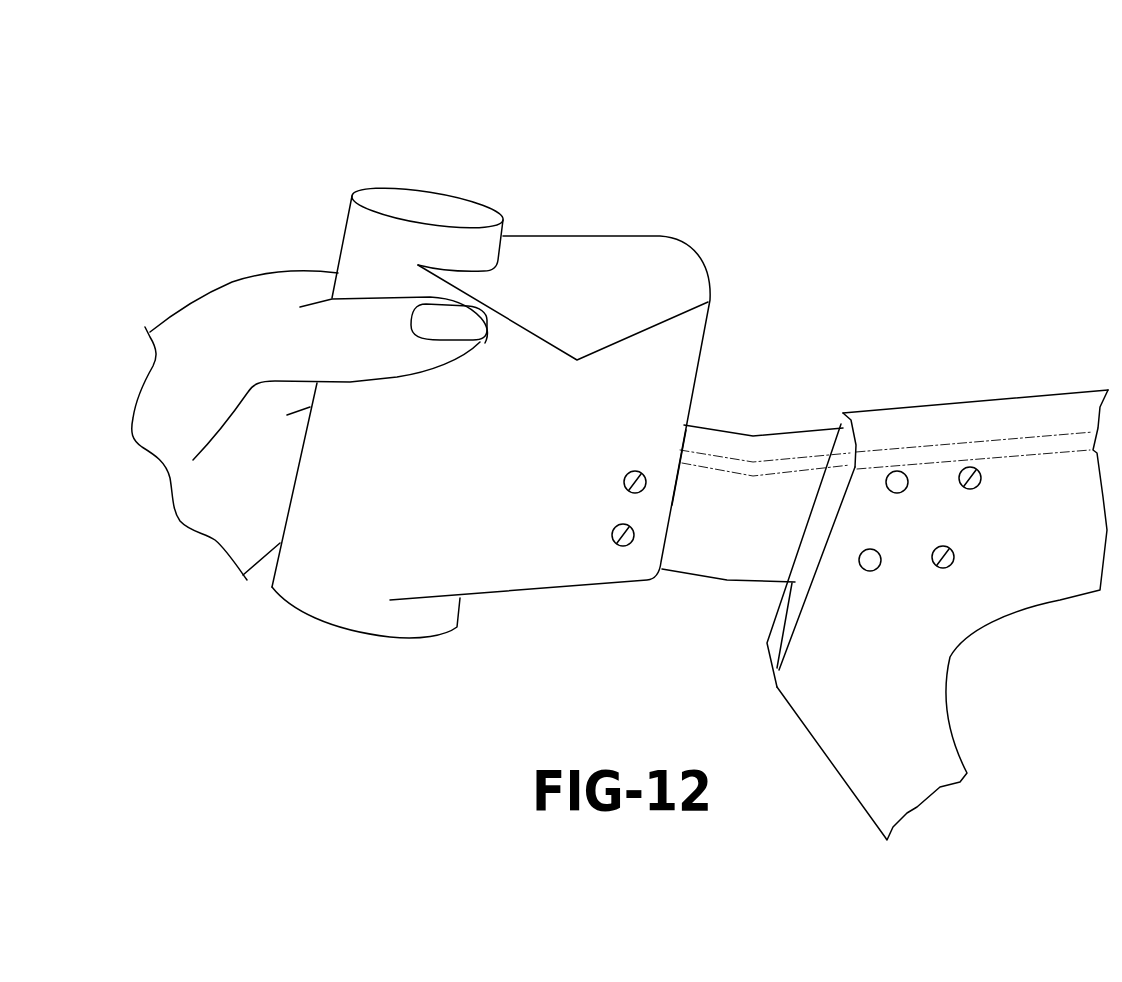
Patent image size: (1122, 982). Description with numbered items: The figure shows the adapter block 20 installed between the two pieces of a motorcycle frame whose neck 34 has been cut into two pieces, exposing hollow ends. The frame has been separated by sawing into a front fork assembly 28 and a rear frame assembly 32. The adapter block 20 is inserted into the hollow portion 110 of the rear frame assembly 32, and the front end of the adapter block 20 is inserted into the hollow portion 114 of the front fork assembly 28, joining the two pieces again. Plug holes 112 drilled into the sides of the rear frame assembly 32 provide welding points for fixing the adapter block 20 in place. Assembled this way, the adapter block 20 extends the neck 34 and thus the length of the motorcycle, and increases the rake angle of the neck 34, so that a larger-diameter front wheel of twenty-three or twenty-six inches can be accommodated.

The adapter block 20 is at (769, 370).
The front fork assembly 28 is at (598, 168).
The rear frame assembly 32 is at (1014, 338).
The neck 34 is at (407, 238).
The hollow portion of the rear frame assembly 110 is at (775, 607).
The plug holes 112 is at (963, 471).
The hollow portion of the front fork assembly 114 is at (684, 541).